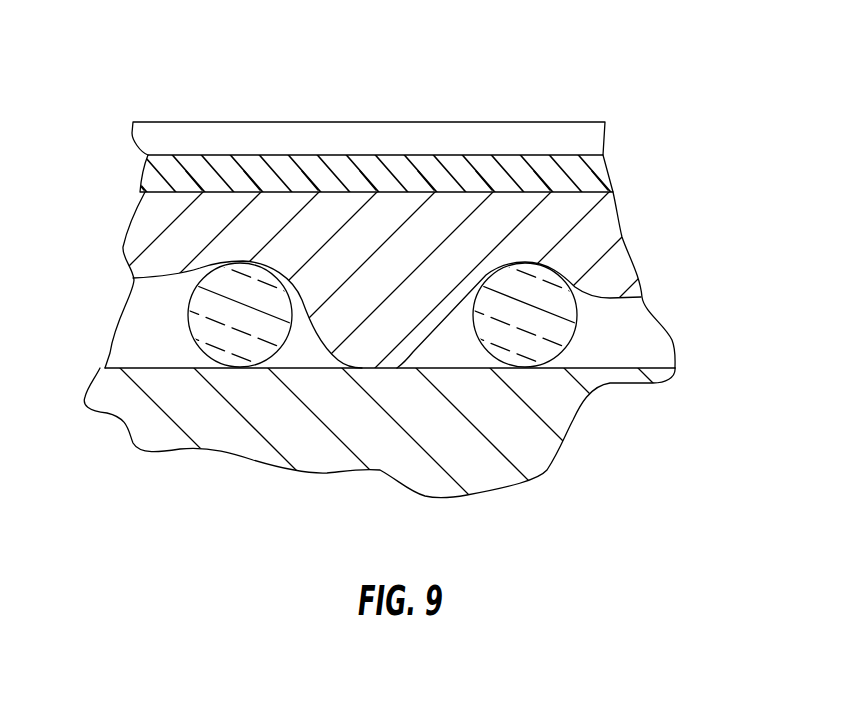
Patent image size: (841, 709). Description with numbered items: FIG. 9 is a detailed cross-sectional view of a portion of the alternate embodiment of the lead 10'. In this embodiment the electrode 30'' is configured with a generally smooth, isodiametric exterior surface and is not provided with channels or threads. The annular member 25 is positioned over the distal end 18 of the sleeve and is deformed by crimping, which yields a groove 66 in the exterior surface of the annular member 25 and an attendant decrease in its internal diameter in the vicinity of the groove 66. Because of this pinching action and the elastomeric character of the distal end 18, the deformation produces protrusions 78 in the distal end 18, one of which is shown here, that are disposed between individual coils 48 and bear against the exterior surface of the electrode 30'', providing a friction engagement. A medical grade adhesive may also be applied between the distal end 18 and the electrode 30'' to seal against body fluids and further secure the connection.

The lead 10' is at (401, 271).
The annular member 25 is at (564, 121).
The groove 66 is at (343, 148).
The distal end 18 is at (385, 362).
The coils 48 is at (190, 313).
The protrusions 78 is at (313, 345).
The electrode 30'' is at (433, 440).